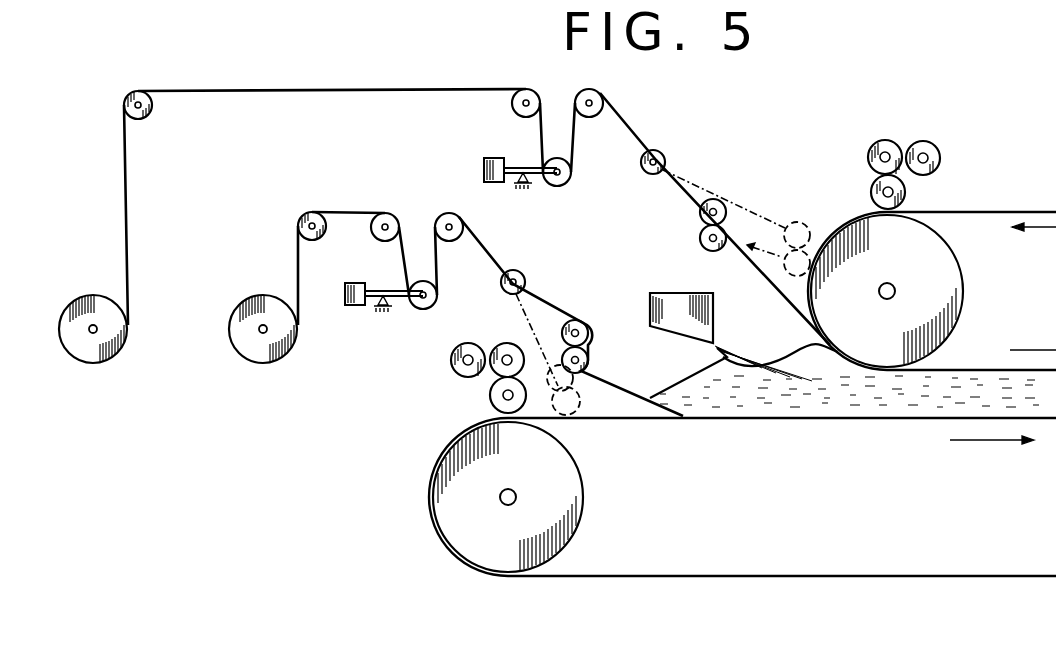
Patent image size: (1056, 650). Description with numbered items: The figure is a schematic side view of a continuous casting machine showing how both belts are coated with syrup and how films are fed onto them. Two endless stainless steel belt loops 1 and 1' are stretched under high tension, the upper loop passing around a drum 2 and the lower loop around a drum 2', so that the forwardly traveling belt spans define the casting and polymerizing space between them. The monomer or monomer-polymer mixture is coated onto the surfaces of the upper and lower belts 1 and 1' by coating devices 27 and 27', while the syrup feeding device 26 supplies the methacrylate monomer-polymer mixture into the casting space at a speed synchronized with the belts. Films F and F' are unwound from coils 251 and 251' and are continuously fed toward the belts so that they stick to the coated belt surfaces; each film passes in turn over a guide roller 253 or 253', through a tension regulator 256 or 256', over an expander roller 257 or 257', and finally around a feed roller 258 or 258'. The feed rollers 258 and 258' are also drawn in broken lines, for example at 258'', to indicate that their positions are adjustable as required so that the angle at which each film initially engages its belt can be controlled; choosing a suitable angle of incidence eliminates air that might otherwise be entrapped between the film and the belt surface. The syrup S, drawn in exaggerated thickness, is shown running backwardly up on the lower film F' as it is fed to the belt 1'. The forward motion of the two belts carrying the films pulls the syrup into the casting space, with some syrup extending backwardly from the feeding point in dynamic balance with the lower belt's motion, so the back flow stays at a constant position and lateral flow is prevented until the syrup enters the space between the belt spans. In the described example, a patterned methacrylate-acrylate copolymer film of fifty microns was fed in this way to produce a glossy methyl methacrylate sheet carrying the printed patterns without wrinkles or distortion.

The stainless steel belt loop 1 is at (932, 264).
The stainless steel belt loop 1' is at (742, 497).
The drum 2 is at (887, 273).
The drum 2' is at (483, 497).
The syrup feeding device 26 is at (674, 305).
The coating device 27 is at (904, 153).
The coating device 27' is at (467, 378).
The coil 251 is at (103, 355).
The coil 251' is at (263, 355).
The guide roller 253 is at (150, 86).
The guide roller 253' is at (318, 205).
The tension regulator 256 is at (538, 196).
The tension regulator 256' is at (391, 317).
The expander roller 257 is at (677, 141).
The expander roller 257' is at (548, 269).
The feed roller 258 is at (725, 202).
The feed roller 258' is at (594, 327).
The transferred position of feed roller 258'' is at (595, 354).
The film F is at (477, 196).
The film F' is at (490, 294).
The syrup S is at (825, 393).